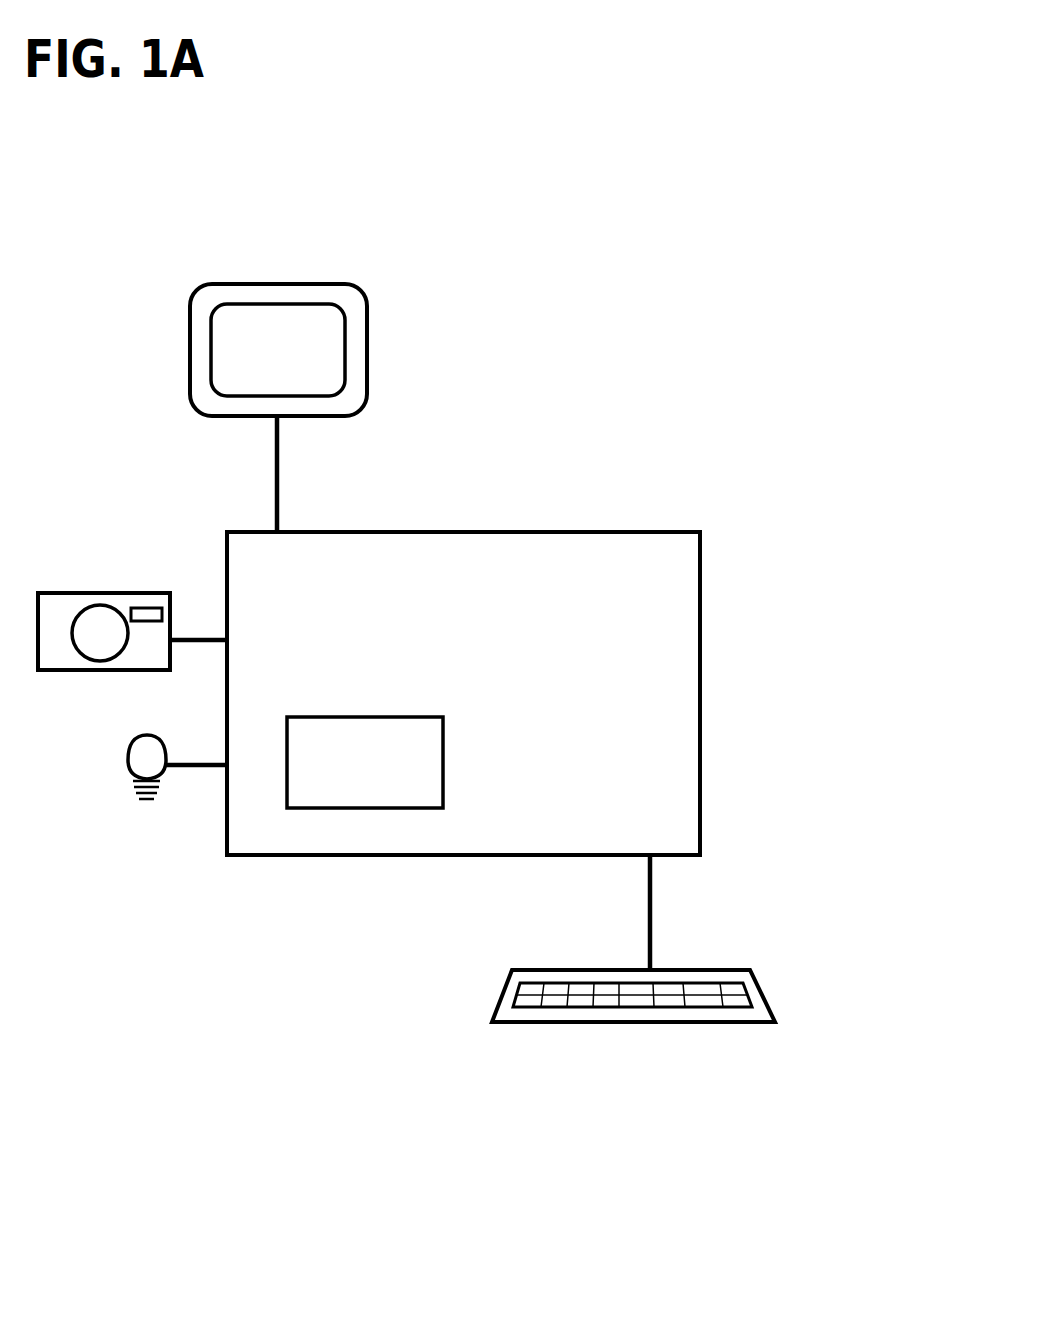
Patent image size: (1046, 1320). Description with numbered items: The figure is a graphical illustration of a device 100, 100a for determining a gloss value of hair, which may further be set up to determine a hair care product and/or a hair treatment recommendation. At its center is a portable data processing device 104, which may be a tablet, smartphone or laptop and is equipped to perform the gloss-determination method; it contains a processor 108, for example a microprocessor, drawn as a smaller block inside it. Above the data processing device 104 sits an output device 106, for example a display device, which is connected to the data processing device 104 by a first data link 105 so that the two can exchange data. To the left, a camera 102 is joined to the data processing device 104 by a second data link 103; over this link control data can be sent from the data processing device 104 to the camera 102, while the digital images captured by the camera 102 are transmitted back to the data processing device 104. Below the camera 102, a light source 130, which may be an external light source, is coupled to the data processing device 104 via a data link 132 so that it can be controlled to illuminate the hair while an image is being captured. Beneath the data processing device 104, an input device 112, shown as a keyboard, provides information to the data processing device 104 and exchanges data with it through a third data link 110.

The device for determining a gloss value of hair 100 is at (806, 332).
The device for determining a gloss value of hair 100a is at (848, 305).
The camera 102 is at (58, 592).
The second data link 103 is at (200, 638).
The portable data processing device 104 is at (522, 531).
The first data link 105 is at (280, 512).
The output device 106 is at (368, 376).
The processor 108 is at (396, 808).
The third data link 110 is at (655, 958).
The input device 112 is at (625, 1010).
The light source 130 is at (140, 800).
The data link 132 is at (200, 770).